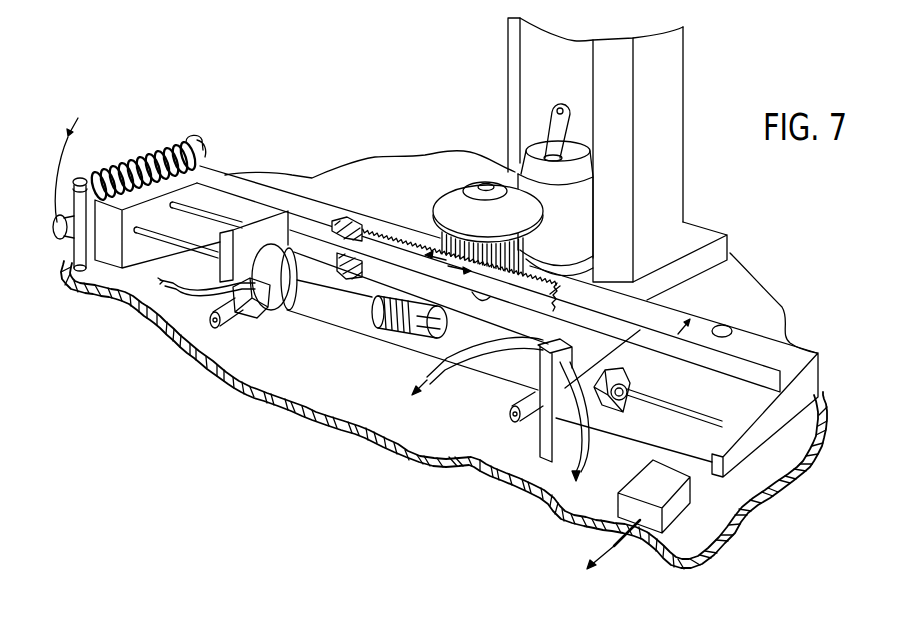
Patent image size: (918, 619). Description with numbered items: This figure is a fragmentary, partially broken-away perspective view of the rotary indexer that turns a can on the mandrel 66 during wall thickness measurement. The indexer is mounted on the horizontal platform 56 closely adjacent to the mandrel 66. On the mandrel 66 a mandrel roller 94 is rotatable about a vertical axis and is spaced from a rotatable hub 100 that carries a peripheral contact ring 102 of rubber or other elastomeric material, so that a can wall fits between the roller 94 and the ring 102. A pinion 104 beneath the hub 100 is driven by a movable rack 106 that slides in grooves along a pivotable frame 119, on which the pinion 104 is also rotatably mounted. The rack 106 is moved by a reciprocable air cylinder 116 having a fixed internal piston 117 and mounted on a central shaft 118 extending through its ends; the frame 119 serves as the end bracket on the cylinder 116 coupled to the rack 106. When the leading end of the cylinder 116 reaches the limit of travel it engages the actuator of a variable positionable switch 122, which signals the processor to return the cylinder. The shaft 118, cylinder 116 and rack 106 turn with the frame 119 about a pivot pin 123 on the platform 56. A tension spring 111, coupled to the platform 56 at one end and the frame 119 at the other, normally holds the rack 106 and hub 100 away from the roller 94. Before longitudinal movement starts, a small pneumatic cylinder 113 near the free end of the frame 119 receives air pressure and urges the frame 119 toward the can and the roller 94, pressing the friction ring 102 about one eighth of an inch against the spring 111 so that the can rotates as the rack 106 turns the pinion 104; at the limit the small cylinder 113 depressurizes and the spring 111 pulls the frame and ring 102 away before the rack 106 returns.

The horizontal platform 56 is at (467, 445).
The mandrel 66 is at (683, 160).
The mandrel roller 94 is at (580, 230).
The rotatable hub 100 is at (452, 207).
The peripheral contact ring 102 is at (455, 228).
The pinion 104 is at (556, 250).
The rack 106 is at (365, 240).
The tension spring 111 is at (152, 152).
The small pneumatic cylinder 113 is at (80, 290).
The air cylinder 116 is at (320, 300).
The piston 117 is at (407, 320).
The central shaft 118 is at (667, 412).
The pivotable frame 119 is at (300, 202).
The switch 122 is at (675, 510).
The pivot pin 123 is at (740, 320).